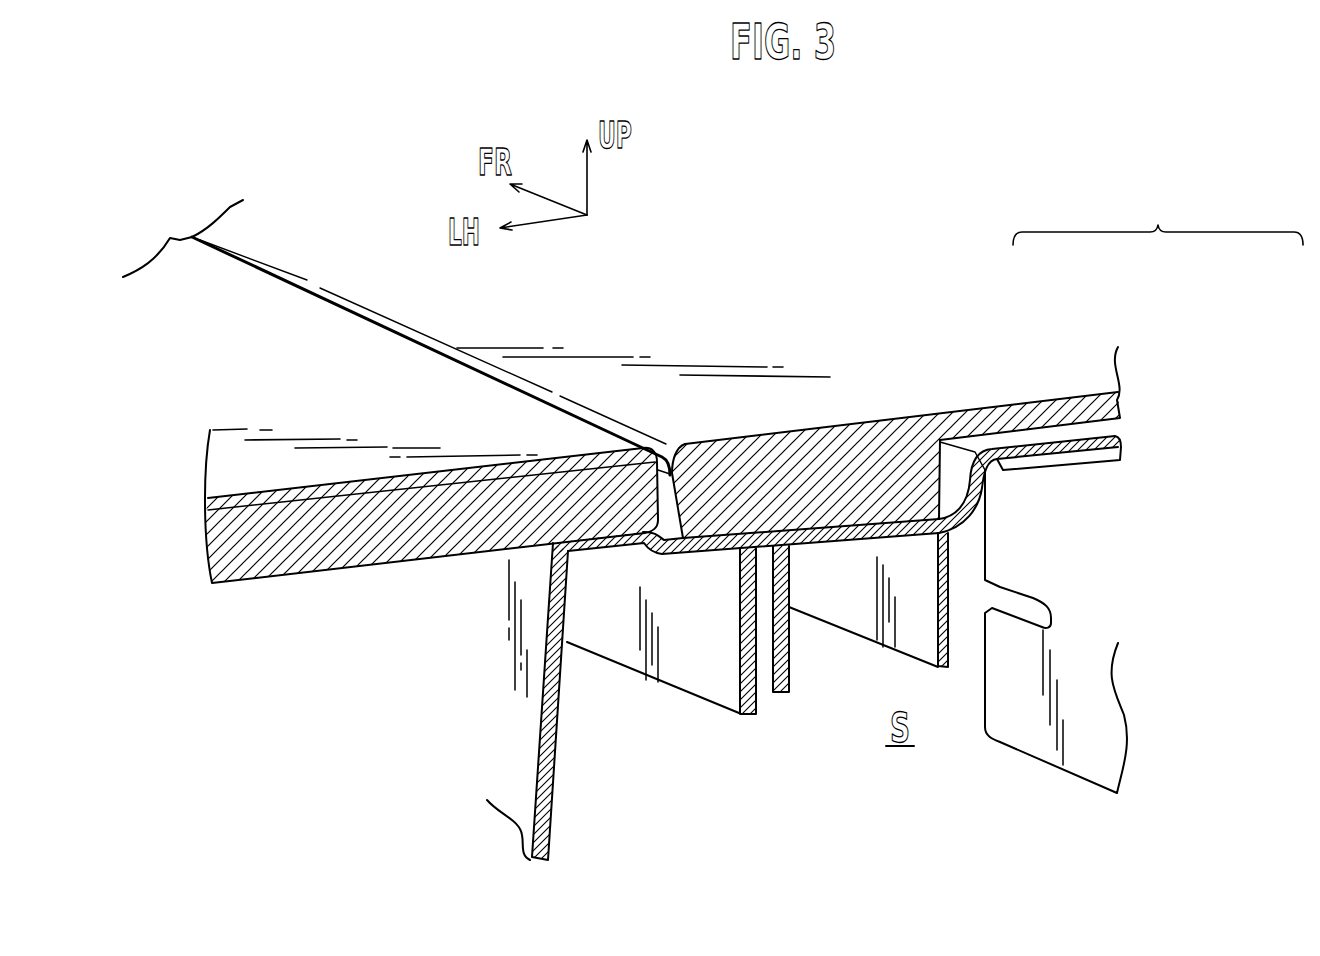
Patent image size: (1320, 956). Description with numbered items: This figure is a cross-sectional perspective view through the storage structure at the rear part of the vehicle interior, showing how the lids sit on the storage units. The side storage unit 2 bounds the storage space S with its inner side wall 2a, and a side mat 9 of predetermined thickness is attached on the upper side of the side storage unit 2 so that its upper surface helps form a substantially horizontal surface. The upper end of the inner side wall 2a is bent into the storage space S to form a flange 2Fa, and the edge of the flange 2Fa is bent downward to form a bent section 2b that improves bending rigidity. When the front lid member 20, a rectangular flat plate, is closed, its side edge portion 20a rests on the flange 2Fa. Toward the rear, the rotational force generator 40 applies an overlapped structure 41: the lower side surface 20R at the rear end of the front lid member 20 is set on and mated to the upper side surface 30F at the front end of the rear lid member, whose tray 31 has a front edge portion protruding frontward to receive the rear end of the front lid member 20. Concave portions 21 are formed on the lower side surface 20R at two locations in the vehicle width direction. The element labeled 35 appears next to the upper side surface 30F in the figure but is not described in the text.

The side storage unit 2 is at (717, 732).
The inner side wall 2a is at (560, 745).
The bent section 2b is at (738, 650).
The flange 2Fa is at (676, 553).
The side mat 9 is at (348, 470).
The front lid member 20 is at (987, 359).
The side edge portion 20a is at (726, 470).
The lower side surface 20R is at (1038, 352).
The concave portion 21 is at (1013, 430).
The upper side surface 30F is at (1114, 384).
The front flange of rear panel 35 is at (1087, 430).
The tray 31 is at (1093, 730).
The rotational force generator 40 is at (1158, 235).
The overlapped structure 41 is at (1121, 357).